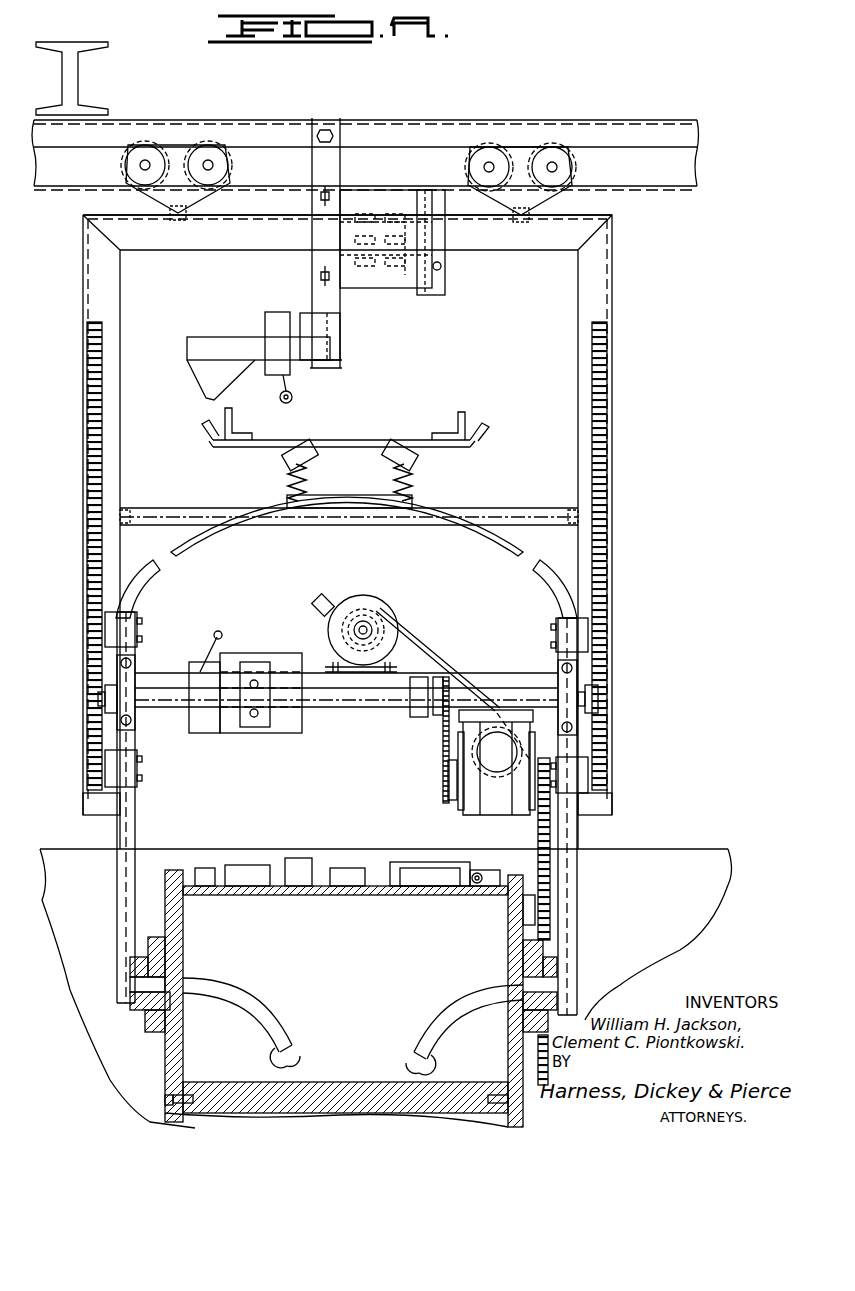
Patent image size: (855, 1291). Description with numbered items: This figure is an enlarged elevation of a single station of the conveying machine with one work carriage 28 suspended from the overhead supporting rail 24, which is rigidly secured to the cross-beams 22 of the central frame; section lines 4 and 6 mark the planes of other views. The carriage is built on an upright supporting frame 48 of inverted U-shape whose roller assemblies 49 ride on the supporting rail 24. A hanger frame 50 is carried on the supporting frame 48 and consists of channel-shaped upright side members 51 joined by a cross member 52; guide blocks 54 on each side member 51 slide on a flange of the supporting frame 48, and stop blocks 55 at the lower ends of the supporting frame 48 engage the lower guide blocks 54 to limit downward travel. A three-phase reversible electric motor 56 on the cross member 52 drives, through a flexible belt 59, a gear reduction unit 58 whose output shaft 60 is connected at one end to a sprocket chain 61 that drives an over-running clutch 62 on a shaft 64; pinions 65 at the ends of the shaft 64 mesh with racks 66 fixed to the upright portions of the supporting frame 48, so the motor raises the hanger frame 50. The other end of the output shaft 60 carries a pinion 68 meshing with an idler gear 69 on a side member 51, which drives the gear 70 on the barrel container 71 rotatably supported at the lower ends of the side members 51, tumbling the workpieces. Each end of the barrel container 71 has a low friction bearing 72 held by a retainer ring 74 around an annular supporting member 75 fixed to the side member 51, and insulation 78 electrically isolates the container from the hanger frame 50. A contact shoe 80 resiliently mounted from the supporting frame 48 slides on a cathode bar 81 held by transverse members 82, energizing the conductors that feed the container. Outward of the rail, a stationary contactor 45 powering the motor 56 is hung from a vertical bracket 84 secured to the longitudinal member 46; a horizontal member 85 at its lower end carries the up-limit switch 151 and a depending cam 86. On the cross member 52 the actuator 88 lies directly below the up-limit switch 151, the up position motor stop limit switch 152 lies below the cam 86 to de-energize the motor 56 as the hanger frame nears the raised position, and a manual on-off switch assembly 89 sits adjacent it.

The cross-beam 22 is at (72, 82).
The supporting rail 24 is at (690, 182).
The longitudinal member 46 is at (615, 128).
The roller assemblies 49 is at (168, 203).
The section line 6 is at (305, 150).
The stationary contactor 45 is at (400, 285).
The upright supporting frame 48 is at (600, 295).
The work carriage 28 is at (612, 388).
The rack 66 is at (100, 490).
The horizontal member 85 is at (187, 345).
The up-limit switch LS1 151 is at (265, 320).
The cam 86 is at (206, 392).
The vertical bracket 84 is at (330, 328).
The cathode bar 81 is at (480, 432).
The transverse members 82 is at (250, 430).
The contact shoe 80 is at (412, 470).
The upright side member 51 is at (135, 825).
The guide blocks 54 is at (105, 630).
The pinion 65 is at (98, 700).
The stop blocks 55 is at (100, 805).
The cross member 52 is at (508, 645).
The shaft 64 is at (330, 697).
The up position motor stop limit switch LS2 152 is at (205, 727).
The actuator 88 is at (285, 655).
The on-off switch assembly 89 is at (262, 727).
The reversible electric motor 56 is at (380, 605).
The flexible belt 59 is at (425, 655).
The over-running clutch 62 is at (420, 717).
The sprocket chain 61 is at (443, 750).
The output shaft 60 is at (448, 800).
The gear reduction unit 58 is at (485, 795).
The pinion 68 is at (497, 800).
The idler gear 69 is at (538, 810).
The section line 4 is at (527, 605).
The hanger frame 50 is at (588, 919).
The barrel container 71 is at (512, 920).
The gear 70 is at (545, 908).
The retainer ring 74 is at (160, 945).
The bearing 72 is at (150, 960).
The annular supporting member 75 is at (160, 975).
The insulation 78 is at (138, 1010).